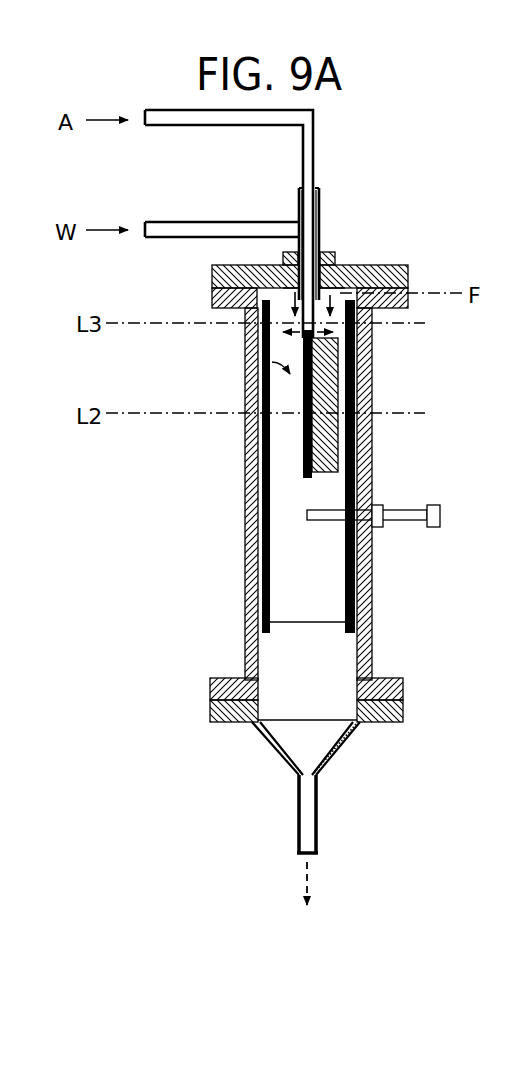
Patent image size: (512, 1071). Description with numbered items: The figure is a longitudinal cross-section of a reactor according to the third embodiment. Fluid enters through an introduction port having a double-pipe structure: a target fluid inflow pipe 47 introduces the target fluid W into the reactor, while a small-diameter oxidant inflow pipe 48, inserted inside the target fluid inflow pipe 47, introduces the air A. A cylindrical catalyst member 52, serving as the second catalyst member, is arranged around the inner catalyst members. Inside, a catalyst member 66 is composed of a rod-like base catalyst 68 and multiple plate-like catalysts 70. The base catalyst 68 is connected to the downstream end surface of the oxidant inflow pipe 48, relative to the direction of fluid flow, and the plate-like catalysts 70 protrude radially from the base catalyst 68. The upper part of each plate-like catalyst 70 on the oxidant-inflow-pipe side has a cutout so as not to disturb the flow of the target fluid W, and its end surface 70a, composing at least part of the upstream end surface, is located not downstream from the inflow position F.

The target fluid inflow pipe 47 is at (298, 200).
The oxidant inflow pipe 48 is at (316, 158).
The cylindrical catalyst member 52 is at (262, 526).
The catalyst member 66 is at (258, 373).
The base catalyst 68 is at (303, 428).
The plate-like catalyst 70 is at (336, 380).
The end surface 70a is at (340, 293).